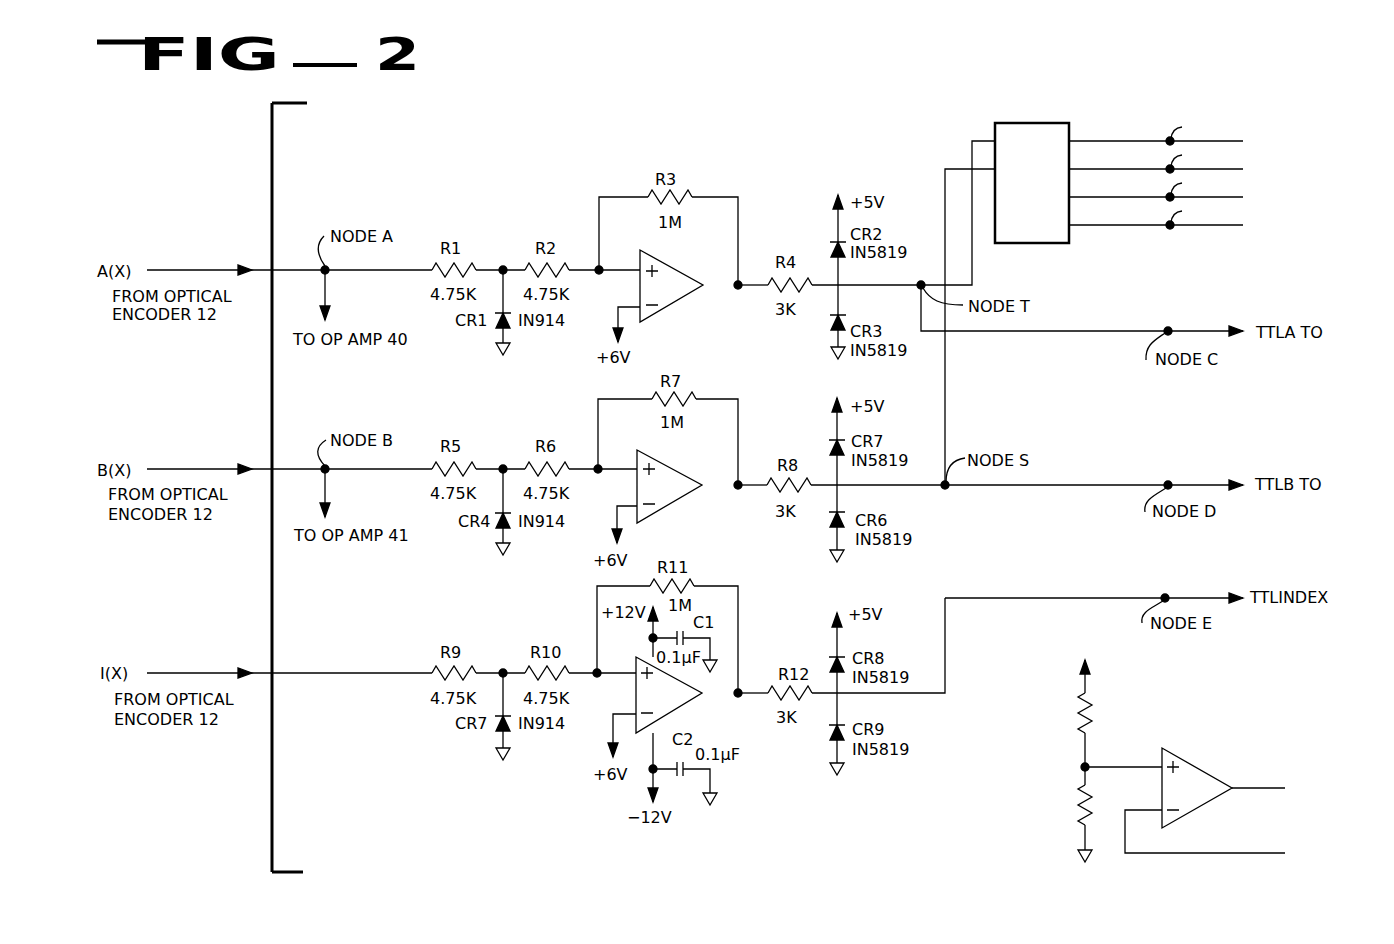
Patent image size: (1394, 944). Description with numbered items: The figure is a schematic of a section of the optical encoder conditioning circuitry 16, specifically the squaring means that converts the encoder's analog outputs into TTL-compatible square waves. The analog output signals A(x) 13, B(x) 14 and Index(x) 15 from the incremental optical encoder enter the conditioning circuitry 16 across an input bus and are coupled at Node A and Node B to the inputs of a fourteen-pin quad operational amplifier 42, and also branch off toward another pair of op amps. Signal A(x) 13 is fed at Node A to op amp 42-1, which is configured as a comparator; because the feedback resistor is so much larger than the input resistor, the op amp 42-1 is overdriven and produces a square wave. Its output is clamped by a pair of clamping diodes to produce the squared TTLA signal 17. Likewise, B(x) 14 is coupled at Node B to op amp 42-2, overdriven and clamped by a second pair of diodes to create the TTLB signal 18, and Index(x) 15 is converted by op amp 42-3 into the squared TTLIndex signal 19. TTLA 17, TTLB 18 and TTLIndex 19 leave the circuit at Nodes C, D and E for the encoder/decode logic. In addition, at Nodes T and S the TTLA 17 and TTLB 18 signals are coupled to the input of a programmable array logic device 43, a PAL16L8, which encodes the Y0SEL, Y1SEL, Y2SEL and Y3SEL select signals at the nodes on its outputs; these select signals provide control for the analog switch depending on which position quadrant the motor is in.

The analog output signal A(x) 13 is at (207, 270).
The analog output signal B(x) 14 is at (197, 469).
The Index(x) signal 15 is at (197, 673).
The optical encoder conditioning circuitry 16 is at (268, 167).
The TTLA signal 17 is at (1103, 331).
The TTLB signal 18 is at (1093, 485).
The TTLIndex signal 19 is at (1047, 598).
The quad operational amplifier 42 is at (1187, 760).
The op amp 42-1 is at (668, 306).
The op amp 42-2 is at (665, 508).
The op amp 42-3 is at (670, 708).
The programmable array logic device 43 is at (1037, 121).